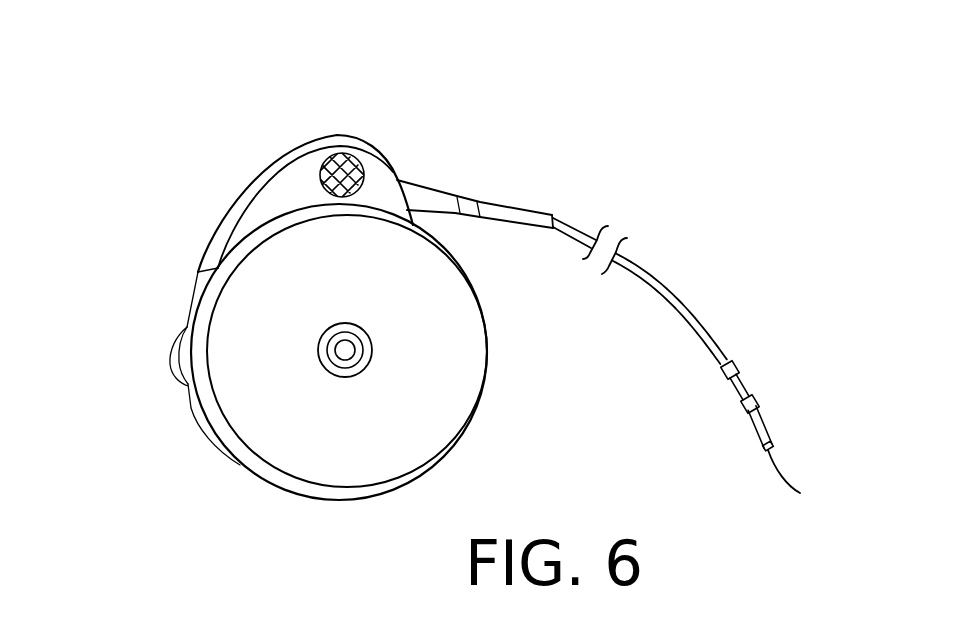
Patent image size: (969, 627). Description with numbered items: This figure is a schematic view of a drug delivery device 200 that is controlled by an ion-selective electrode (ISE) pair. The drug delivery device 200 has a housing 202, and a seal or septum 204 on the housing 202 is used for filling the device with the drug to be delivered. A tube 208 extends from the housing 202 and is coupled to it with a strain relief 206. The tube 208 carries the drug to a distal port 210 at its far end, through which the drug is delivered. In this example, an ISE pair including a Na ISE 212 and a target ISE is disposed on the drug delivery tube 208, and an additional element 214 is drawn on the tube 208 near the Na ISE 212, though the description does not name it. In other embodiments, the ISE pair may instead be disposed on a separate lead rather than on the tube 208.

The drug delivery device 200 is at (386, 56).
The housing 202 is at (193, 298).
The seal or septum 204 is at (340, 345).
The strain relief 206 is at (423, 196).
The tube 208 is at (579, 228).
The distal port 210 is at (811, 481).
The Na ISE 212 is at (757, 405).
The connector 214 is at (735, 363).